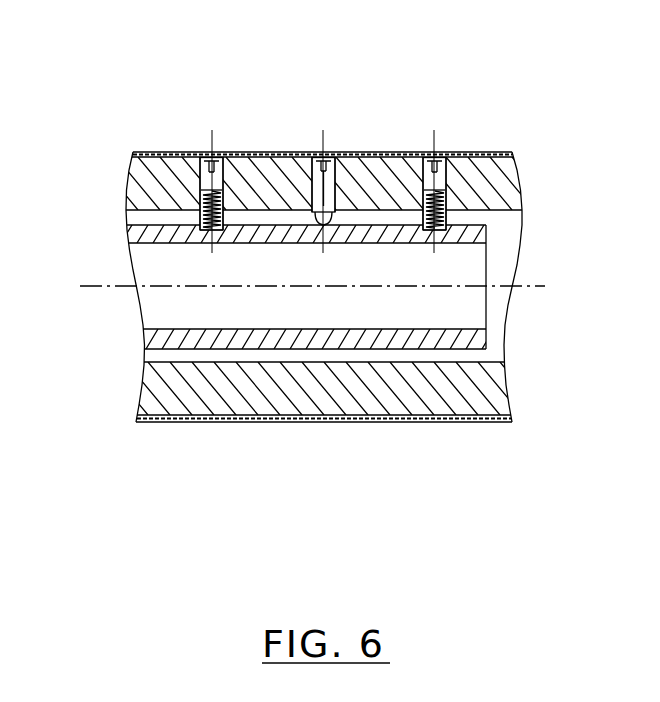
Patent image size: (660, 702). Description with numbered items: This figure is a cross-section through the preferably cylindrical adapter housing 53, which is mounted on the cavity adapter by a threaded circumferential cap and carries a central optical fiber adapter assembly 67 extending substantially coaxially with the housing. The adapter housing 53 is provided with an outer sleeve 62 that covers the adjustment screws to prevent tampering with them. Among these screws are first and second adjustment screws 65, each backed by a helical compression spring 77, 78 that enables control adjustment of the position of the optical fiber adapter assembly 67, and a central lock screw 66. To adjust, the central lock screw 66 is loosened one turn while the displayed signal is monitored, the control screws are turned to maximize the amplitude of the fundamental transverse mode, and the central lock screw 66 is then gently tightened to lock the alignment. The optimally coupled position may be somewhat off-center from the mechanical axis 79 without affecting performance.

The adapter housing 53 is at (172, 390).
The outer sleeve 62 is at (412, 423).
The adjustment screws 65 is at (187, 153).
The central lock screw 66 is at (347, 155).
The optical fiber adapter assembly 67 is at (468, 337).
The helical compression spring 77 is at (197, 202).
The helical compression spring 78 is at (447, 202).
The mechanical axis 79 is at (177, 307).